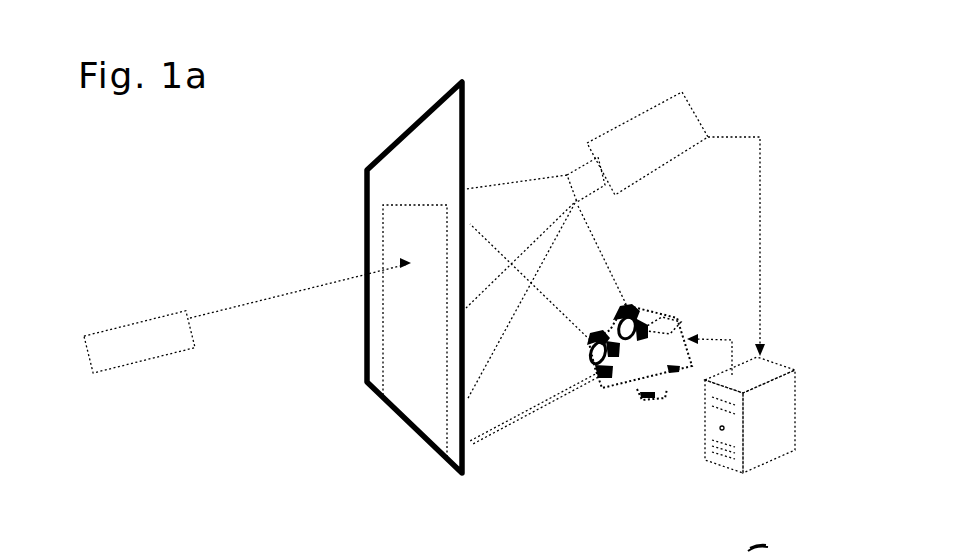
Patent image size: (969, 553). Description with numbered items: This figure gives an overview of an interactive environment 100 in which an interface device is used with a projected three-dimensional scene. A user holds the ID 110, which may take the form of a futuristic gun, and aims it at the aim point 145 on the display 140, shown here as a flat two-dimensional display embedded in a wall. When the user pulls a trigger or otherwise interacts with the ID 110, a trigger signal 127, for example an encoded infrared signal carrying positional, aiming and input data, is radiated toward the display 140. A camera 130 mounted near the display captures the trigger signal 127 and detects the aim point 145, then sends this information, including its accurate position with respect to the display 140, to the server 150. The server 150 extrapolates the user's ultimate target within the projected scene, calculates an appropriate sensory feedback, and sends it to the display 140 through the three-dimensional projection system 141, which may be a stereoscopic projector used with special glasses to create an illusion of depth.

The environment 100 is at (727, 104).
The interface device (ID) 110 is at (139, 342).
The trigger signal 127 is at (267, 299).
The camera 130 is at (615, 246).
The display 140 is at (346, 277).
The 3D projection system 141 is at (600, 390).
The aim point 145 is at (277, 239).
The server 150 is at (708, 464).